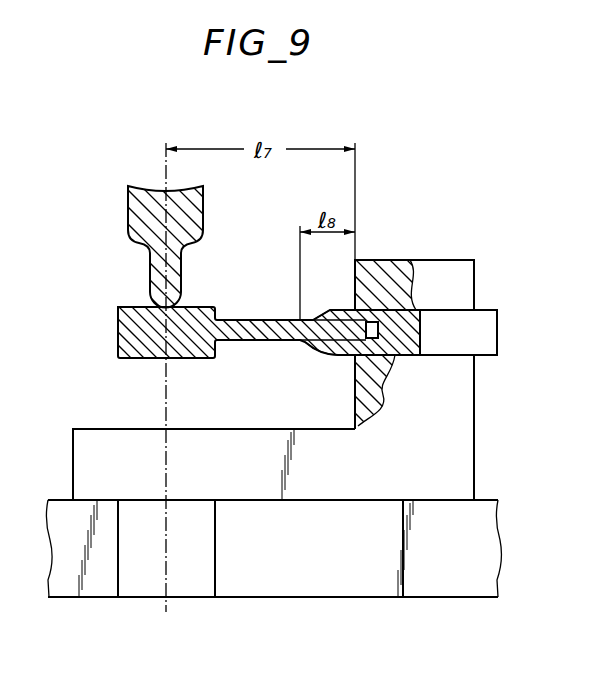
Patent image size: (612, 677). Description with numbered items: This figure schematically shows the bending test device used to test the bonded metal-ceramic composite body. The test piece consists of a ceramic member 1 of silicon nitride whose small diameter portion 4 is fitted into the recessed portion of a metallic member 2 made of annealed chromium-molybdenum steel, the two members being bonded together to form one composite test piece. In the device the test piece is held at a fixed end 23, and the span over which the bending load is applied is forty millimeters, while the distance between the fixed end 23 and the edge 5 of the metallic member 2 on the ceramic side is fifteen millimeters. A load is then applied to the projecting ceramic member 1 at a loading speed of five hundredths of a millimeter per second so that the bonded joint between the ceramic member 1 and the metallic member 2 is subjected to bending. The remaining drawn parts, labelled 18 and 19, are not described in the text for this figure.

The ceramic member 1 is at (143, 340).
The metallic member 2 is at (334, 357).
The small diameter portion 4 is at (265, 337).
The edge of the metallic member 5 is at (300, 319).
The frame 18 is at (458, 415).
The rail-shaped workpiece 19 is at (196, 208).
The fixed end of the test piece 23 is at (352, 265).